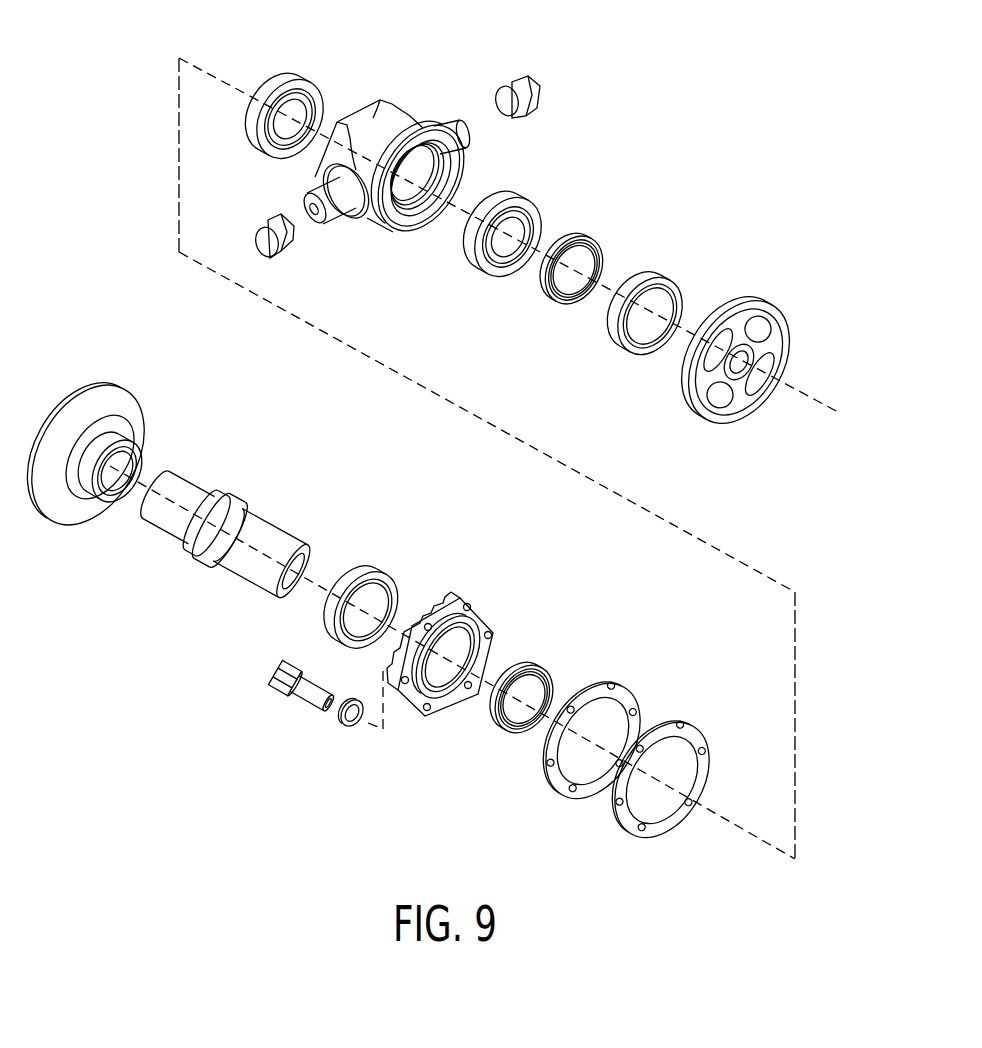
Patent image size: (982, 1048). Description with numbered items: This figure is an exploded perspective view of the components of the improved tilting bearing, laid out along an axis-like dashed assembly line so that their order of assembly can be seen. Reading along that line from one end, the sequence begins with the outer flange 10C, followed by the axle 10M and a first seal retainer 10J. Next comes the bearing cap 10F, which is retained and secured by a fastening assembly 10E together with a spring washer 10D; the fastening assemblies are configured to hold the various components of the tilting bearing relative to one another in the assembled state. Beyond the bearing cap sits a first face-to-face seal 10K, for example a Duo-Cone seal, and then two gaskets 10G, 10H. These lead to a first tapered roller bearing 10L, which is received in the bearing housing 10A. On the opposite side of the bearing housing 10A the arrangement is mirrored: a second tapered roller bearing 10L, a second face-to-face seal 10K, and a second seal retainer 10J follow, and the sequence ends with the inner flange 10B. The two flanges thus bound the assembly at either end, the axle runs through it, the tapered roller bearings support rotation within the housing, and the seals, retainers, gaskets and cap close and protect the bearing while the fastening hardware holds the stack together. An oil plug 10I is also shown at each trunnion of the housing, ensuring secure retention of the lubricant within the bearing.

The bearing housing 10A is at (377, 112).
The inner flange 10B is at (773, 310).
The outer flange 10C is at (125, 408).
The spring washer 10D is at (350, 727).
The fastening assembly 10E is at (305, 690).
The bearing cap 10F is at (477, 610).
The gasket 10G is at (700, 737).
The gasket 10H is at (627, 700).
The plug 10I is at (537, 85).
The seal retainer 10J is at (673, 277).
The face-to-face seal 10K is at (592, 237).
The tapered roller bearing 10L is at (287, 80).
The axle 10M is at (237, 507).